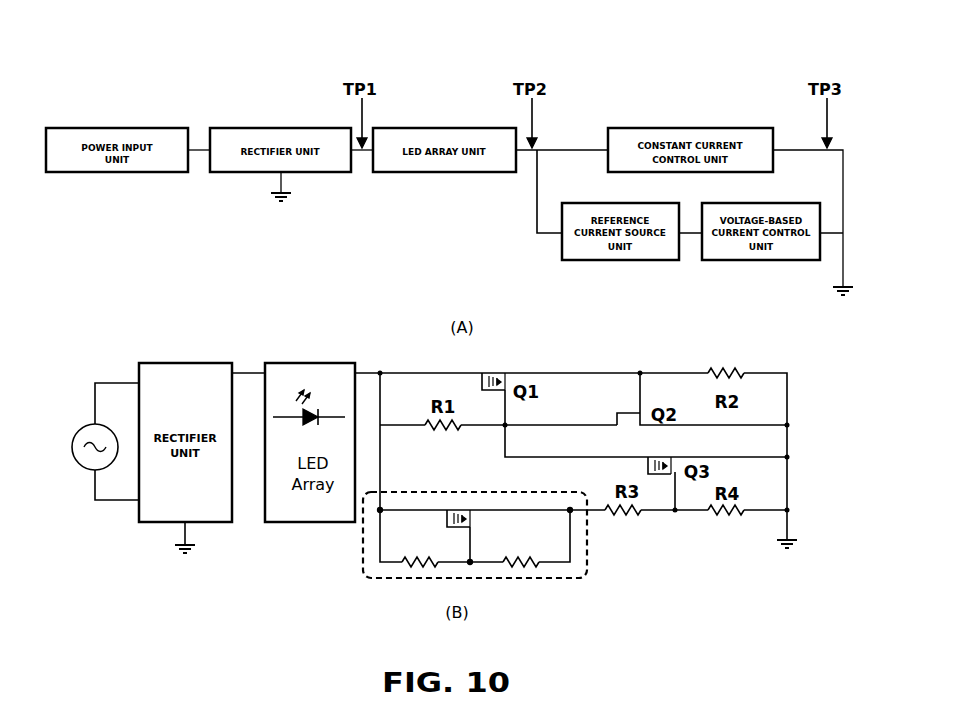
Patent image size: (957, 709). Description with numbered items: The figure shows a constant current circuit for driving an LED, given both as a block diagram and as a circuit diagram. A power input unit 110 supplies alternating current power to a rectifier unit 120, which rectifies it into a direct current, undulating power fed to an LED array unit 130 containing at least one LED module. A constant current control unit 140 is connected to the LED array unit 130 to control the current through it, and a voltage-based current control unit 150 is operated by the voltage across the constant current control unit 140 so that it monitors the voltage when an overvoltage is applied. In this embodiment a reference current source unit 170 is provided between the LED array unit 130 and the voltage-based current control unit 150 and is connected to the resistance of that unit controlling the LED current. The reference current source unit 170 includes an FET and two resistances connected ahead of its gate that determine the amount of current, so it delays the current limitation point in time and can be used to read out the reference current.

The power input unit 110 is at (117, 128).
The rectifier unit 120 is at (281, 128).
The LED array unit 130 is at (441, 128).
The constant current control unit 140 is at (688, 128).
The voltage-based current control unit 150 is at (760, 262).
The reference current source unit 170 is at (562, 248).